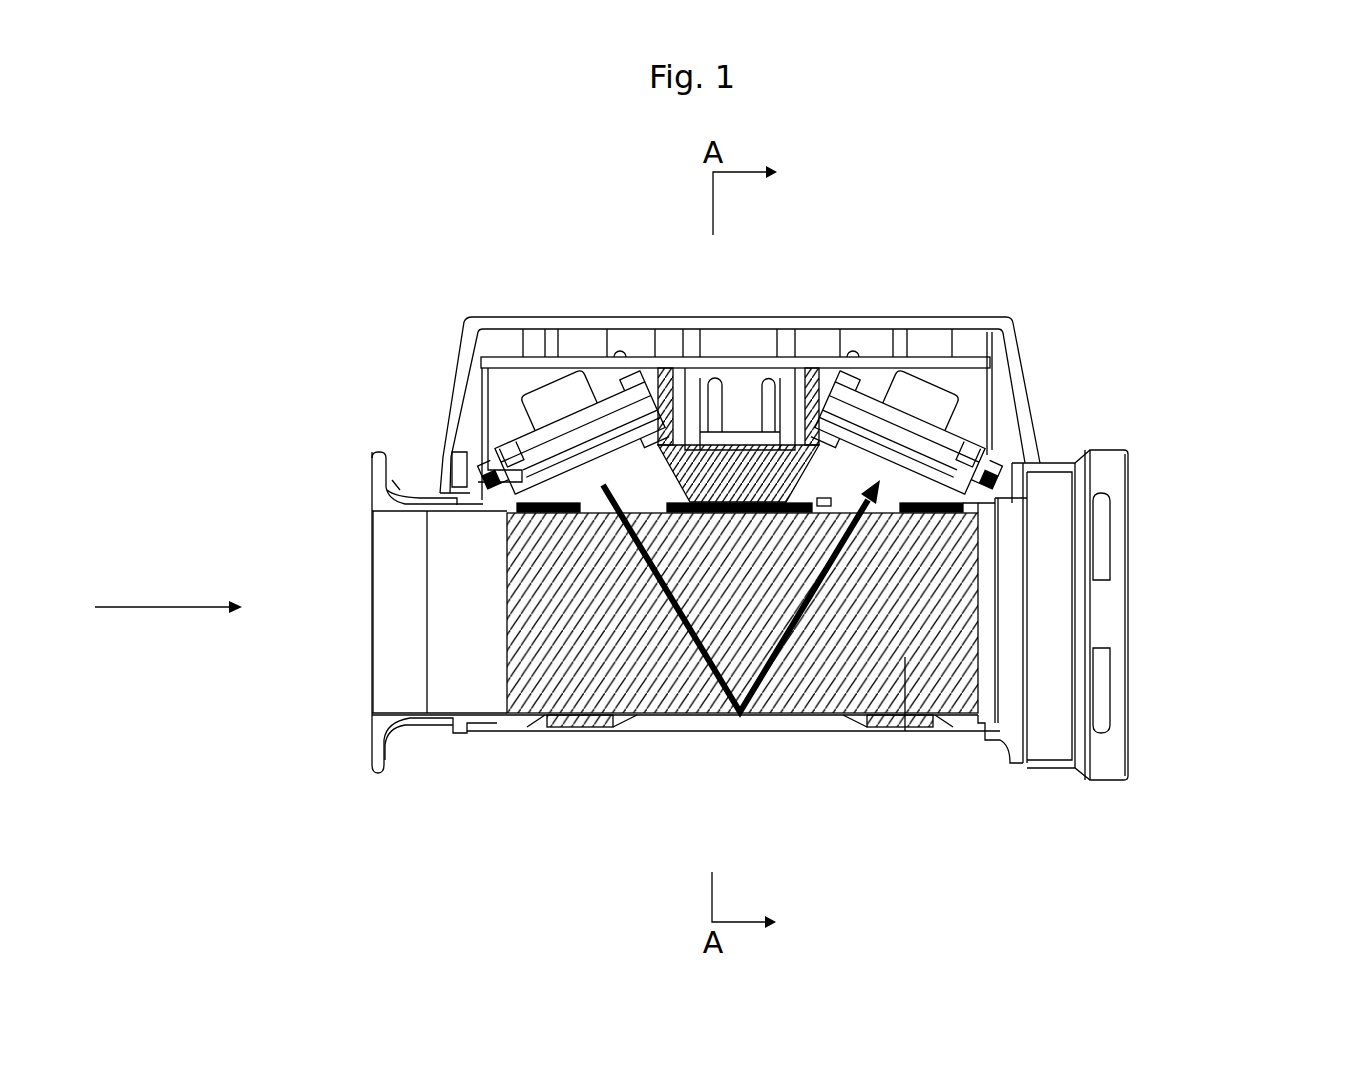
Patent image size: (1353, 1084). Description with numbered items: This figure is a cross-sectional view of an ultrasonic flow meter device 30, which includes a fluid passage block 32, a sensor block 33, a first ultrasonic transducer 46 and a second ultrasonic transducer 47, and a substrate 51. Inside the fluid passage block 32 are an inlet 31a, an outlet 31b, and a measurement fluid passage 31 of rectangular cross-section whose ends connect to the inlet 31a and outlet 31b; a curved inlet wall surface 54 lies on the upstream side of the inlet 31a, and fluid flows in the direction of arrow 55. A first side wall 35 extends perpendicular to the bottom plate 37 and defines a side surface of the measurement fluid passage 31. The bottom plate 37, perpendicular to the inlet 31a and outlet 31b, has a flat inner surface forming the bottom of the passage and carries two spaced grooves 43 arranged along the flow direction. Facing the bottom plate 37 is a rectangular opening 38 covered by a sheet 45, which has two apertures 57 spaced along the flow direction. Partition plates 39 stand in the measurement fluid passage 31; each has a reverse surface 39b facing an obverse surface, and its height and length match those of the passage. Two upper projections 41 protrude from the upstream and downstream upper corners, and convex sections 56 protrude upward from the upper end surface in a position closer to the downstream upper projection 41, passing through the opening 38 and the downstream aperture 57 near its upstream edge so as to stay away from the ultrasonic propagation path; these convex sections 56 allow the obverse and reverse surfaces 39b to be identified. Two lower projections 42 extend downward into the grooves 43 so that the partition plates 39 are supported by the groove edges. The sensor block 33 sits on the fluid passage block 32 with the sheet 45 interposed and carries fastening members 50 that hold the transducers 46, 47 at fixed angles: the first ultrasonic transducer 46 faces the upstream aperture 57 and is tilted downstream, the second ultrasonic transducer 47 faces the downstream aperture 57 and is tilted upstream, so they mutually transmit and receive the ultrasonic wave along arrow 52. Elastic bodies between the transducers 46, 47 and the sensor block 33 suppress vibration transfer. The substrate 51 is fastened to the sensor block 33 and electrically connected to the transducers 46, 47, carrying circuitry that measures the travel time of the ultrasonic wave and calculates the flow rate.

The ultrasonic flow meter device 30 is at (1180, 457).
The measurement fluid passage 31 is at (492, 690).
The inlet 31a is at (462, 565).
The outlet 31b is at (960, 597).
The fluid passage block 32 is at (1132, 790).
The sensor block 33 is at (735, 465).
The first side wall 35 is at (500, 573).
The bottom plate 37 is at (683, 720).
The opening 38 is at (980, 512).
The partition plate 39 is at (498, 731).
The reverse surface 39b is at (905, 660).
The upper projection 41 is at (445, 440).
The lower projection 42 is at (580, 720).
The groove 43 is at (608, 735).
The sheet 45 is at (960, 548).
The first ultrasonic transducer 46 is at (543, 388).
The second ultrasonic transducer 47 is at (918, 388).
The fastening member 50 is at (473, 343).
The substrate 51 is at (672, 345).
The arrow 52 is at (457, 598).
The inlet wall surface 54 is at (393, 532).
The arrow 55 is at (168, 581).
The convex section 56 is at (812, 432).
The aperture 57 is at (490, 476).